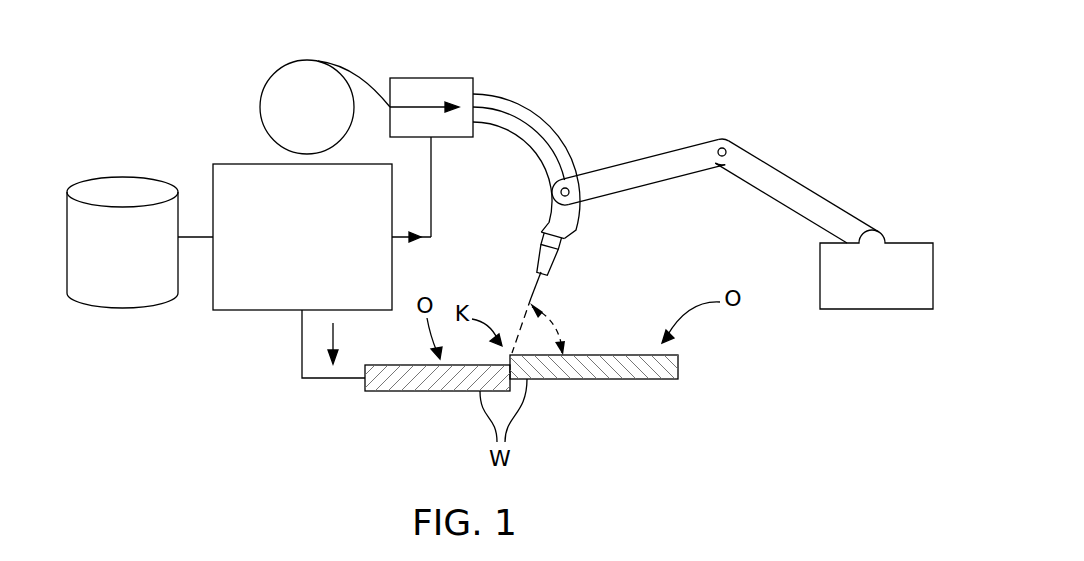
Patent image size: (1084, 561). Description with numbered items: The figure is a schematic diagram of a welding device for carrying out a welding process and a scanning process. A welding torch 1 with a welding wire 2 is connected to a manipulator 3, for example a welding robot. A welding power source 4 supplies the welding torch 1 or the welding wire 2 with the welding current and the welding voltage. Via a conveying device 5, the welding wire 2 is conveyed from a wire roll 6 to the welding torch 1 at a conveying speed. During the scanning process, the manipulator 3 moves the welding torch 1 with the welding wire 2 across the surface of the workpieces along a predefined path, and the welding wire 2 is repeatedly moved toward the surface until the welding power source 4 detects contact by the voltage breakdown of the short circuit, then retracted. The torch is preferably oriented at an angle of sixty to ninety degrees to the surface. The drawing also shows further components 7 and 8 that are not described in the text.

The welding torch 1 is at (580, 233).
The welding wire 2 is at (537, 289).
The manipulator 3 is at (915, 232).
The welding power source 4 is at (247, 186).
The conveying device 5 is at (445, 90).
The wire roll 6 is at (308, 78).
The gas supply 7 is at (122, 195).
The feed rollers 8 is at (430, 108).